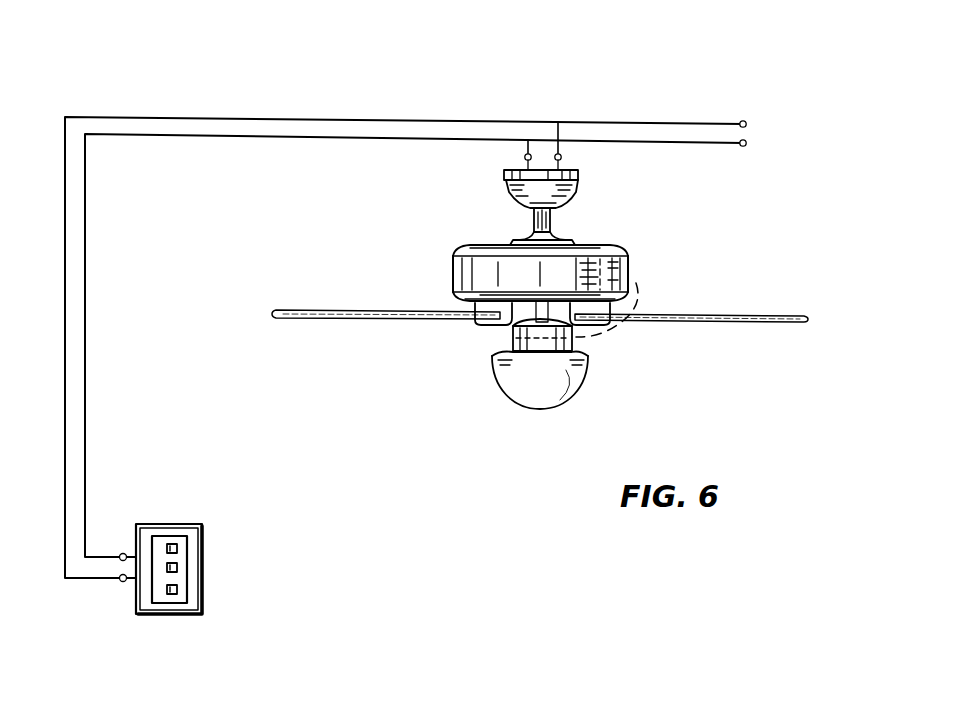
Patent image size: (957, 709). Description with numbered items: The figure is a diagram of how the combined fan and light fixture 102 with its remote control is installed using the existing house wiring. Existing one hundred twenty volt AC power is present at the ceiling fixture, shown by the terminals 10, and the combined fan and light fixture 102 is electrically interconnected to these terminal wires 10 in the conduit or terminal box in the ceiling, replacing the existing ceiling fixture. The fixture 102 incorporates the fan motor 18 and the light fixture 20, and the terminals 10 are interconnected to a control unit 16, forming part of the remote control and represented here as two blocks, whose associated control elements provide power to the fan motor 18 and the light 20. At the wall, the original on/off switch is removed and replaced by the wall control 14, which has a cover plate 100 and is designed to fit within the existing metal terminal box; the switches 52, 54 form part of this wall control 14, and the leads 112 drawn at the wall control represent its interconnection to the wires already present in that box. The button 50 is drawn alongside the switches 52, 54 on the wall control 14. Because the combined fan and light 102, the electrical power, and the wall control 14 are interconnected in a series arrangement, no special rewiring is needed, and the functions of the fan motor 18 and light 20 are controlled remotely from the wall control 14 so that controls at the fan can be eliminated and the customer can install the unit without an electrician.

The terminals 10 is at (532, 154).
The combined fan and light fixture 102 is at (583, 232).
The fan motor 18 is at (562, 279).
The control unit 16 is at (636, 280).
The light fixture 20 is at (584, 376).
The wall control 14 is at (200, 525).
The cover plate 100 is at (145, 529).
The first switch button 50 is at (178, 549).
The switch 52 is at (178, 569).
The switch 54 is at (178, 589).
The power supply leads 112 is at (120, 561).